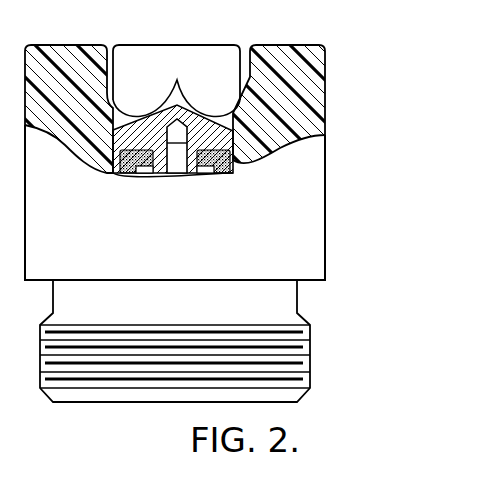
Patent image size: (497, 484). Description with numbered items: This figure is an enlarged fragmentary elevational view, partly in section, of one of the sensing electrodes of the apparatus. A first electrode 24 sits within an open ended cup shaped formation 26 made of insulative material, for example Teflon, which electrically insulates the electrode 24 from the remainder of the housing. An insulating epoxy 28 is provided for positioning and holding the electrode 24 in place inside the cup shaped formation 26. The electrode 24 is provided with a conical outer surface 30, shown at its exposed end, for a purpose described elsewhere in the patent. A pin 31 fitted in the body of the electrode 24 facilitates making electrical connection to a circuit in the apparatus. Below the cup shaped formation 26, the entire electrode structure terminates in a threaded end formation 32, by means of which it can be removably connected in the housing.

The first electrode 24 is at (222, 126).
The cup shaped formation 26 is at (325, 90).
The insulating epoxy 28 is at (223, 175).
The conical outer surface 30 is at (197, 112).
The pin 31 is at (175, 167).
The threaded end formation 32 is at (310, 350).